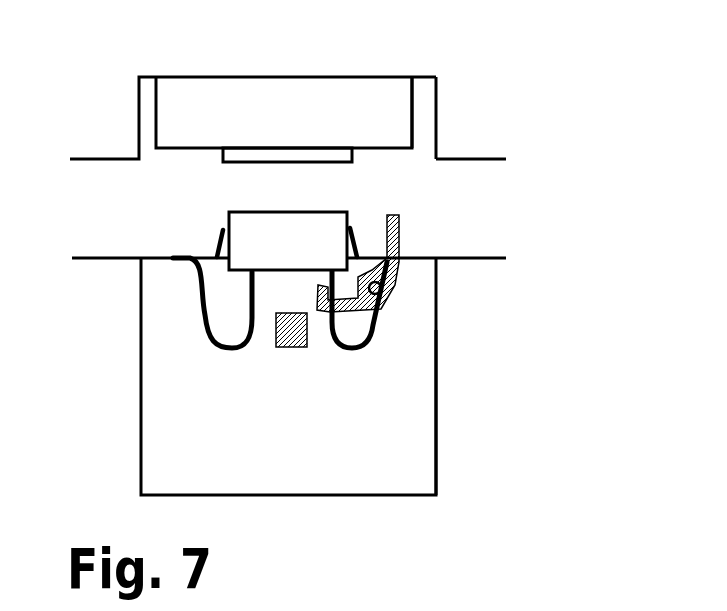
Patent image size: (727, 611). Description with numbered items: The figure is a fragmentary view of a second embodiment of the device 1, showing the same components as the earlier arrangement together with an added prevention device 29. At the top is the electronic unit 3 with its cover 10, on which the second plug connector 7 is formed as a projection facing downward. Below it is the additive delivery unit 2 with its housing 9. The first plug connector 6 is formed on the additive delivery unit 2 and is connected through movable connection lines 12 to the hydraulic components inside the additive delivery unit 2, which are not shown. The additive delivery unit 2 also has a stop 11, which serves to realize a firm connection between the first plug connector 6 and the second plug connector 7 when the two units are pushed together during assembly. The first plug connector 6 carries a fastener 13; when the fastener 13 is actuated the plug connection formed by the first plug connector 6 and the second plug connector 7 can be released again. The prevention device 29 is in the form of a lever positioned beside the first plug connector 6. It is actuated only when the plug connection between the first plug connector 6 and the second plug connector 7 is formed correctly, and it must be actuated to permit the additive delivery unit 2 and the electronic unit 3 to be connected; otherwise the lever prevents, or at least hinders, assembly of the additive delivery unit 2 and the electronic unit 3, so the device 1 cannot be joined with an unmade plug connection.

The device 1 is at (553, 86).
The additive delivery unit 2 is at (428, 513).
The electronic unit 3 is at (132, 54).
The first plug connector 6 is at (230, 213).
The second plug connector 7 is at (353, 158).
The housing 9 is at (436, 331).
The cover 10 is at (437, 112).
The stop 11 is at (277, 348).
The movable connection lines 12 is at (203, 307).
The fastener 13 is at (400, 234).
The prevention device 29 is at (358, 250).